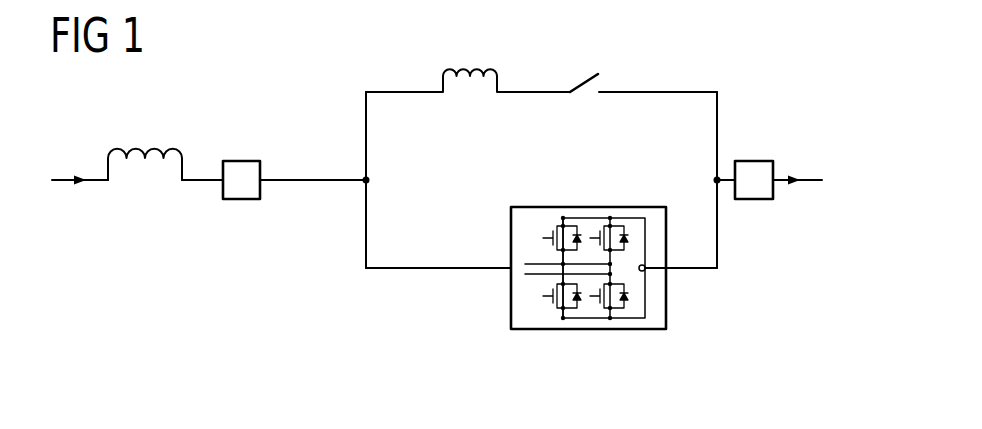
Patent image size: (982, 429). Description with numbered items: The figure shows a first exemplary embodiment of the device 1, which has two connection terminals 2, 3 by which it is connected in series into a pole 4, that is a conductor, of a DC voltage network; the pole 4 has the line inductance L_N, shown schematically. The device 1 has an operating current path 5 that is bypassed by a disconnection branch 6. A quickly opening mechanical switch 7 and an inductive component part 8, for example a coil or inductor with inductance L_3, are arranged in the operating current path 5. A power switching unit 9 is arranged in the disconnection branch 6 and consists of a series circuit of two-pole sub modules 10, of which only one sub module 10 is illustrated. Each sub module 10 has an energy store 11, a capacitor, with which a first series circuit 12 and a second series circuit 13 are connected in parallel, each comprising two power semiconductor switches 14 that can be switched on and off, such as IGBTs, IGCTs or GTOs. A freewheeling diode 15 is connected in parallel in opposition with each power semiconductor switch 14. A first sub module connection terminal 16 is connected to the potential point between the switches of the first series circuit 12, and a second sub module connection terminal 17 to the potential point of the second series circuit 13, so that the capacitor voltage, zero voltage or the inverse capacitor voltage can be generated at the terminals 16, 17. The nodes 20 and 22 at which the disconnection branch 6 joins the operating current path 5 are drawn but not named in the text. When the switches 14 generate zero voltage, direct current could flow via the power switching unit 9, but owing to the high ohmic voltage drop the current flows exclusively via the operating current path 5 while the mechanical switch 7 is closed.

The device 1 is at (792, 90).
The connection terminal 2 is at (238, 160).
The connection terminal 3 is at (752, 160).
The pole 4 is at (59, 178).
The operating current path 5 is at (652, 92).
The disconnection branch 6 is at (434, 270).
The mechanical switch 7 is at (582, 80).
The inductive component part 8 is at (459, 68).
The power switching unit 9 is at (551, 331).
The sub module 10 is at (655, 334).
The energy store 11 is at (648, 269).
The first series circuit 12 is at (564, 199).
The second series circuit 13 is at (612, 199).
The power semiconductor switch 14 is at (545, 237).
The freewheeling diode 15 is at (579, 300).
The first sub module connection terminal 16 is at (525, 264).
The second sub module connection terminal 17 is at (525, 274).
The first node 20 is at (369, 180).
The second node 22 is at (716, 180).